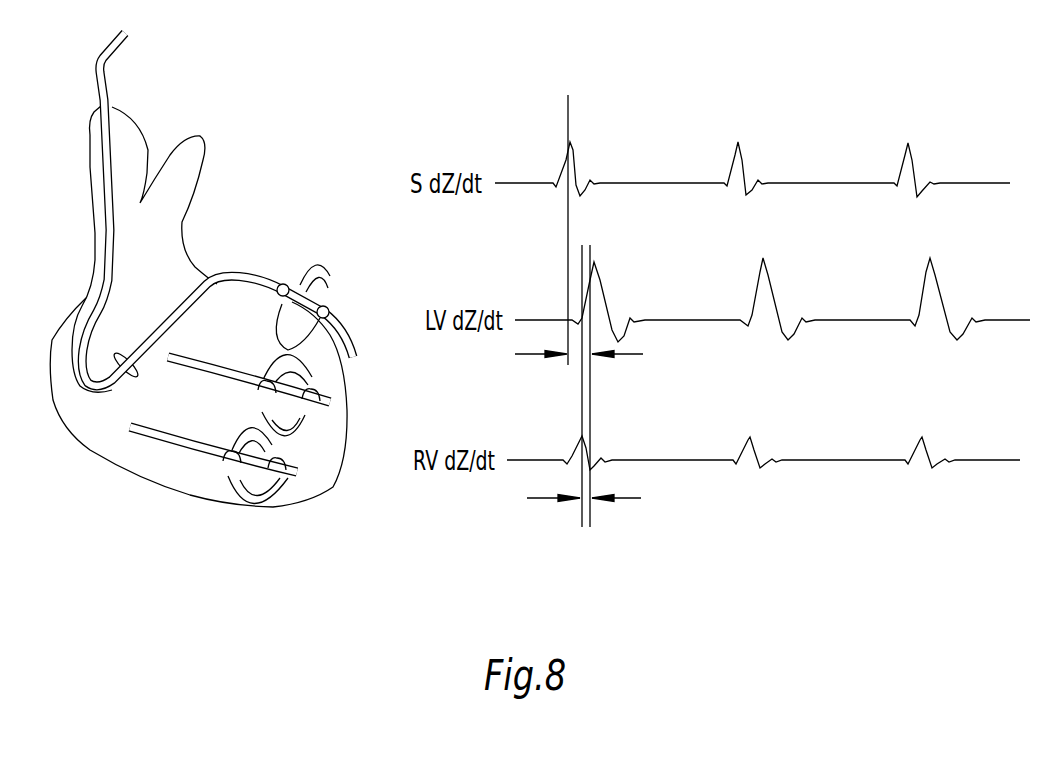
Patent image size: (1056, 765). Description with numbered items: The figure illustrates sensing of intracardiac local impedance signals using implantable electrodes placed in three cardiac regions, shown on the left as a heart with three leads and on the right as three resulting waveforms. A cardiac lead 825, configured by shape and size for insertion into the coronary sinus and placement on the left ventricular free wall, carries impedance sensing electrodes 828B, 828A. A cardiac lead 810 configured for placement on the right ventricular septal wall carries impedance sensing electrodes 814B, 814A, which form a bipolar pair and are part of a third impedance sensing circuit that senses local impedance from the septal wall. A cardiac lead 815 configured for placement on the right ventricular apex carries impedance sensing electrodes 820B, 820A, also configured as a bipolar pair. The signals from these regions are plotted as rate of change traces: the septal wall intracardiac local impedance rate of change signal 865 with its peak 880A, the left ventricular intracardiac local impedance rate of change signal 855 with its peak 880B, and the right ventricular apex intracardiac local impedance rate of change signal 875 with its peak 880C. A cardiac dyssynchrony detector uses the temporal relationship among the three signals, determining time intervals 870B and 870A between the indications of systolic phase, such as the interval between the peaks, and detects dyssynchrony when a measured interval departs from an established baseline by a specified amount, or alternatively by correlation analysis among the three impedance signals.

The cardiac lead 825 is at (106, 73).
The impedance sensing electrode 828B is at (284, 283).
The impedance sensing electrode 828A is at (330, 311).
The cardiac lead 810 is at (176, 366).
The impedance sensing electrode 814B is at (268, 380).
The impedance sensing electrode 814A is at (313, 396).
The cardiac lead 815 is at (165, 460).
The impedance sensing electrode 820B is at (234, 472).
The impedance sensing electrode 820A is at (280, 476).
The RV septal wall intracardiac local impedance rate of change signal 865 is at (977, 182).
The peak 880A is at (571, 142).
The LV intracardiac local impedance rate of change signal 855 is at (1012, 318).
The peak 880B is at (595, 262).
The time interval 870B is at (628, 356).
The RV apex intracardiac local impedance rate of change signal 875 is at (977, 459).
The peak 880C is at (581, 436).
The time interval 870A is at (628, 500).